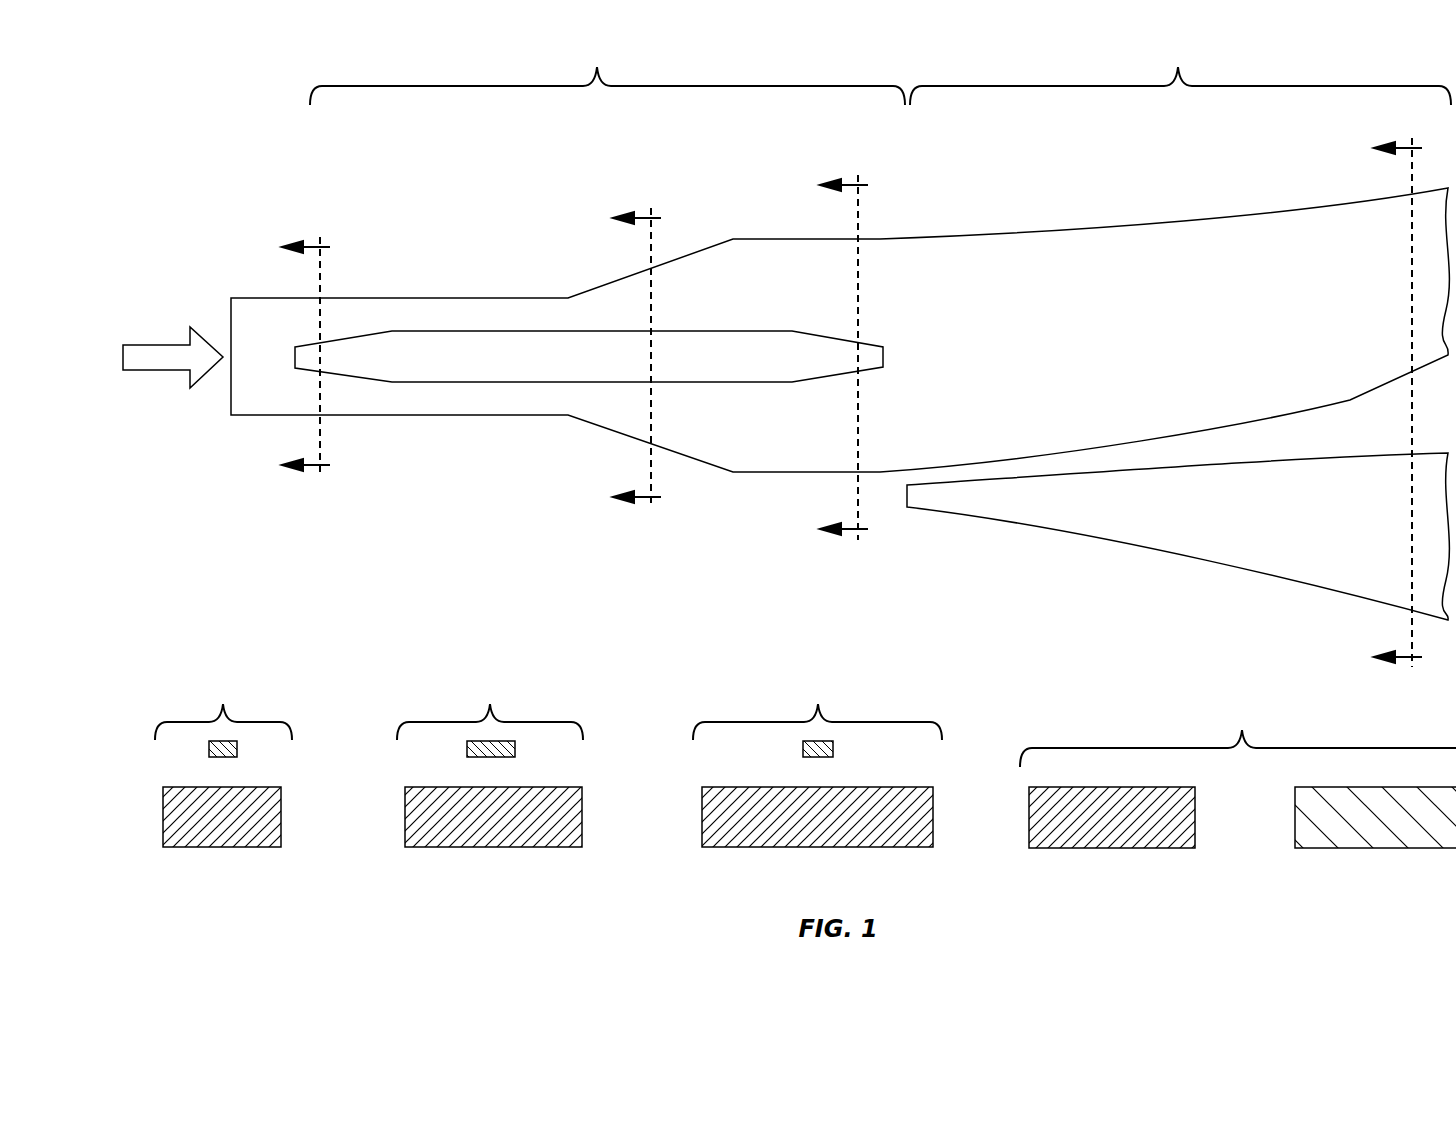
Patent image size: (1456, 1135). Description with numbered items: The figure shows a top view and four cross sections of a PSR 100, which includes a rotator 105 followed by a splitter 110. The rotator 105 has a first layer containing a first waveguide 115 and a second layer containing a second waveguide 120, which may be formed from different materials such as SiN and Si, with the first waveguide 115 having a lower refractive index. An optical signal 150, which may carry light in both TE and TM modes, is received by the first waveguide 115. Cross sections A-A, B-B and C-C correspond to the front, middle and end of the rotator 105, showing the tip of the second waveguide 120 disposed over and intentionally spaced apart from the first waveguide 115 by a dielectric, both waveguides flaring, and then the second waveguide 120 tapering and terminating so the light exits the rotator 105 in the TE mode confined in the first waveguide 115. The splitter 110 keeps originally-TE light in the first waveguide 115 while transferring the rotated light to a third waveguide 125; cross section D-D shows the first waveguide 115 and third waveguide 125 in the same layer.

The PSR 100 is at (232, 122).
The rotator 105 is at (607, 70).
The splitter 110 is at (1180, 70).
The first waveguide 115 is at (475, 417).
The second waveguide 120 is at (470, 332).
The third waveguide 125 is at (1048, 522).
The optical signal 150 is at (155, 372).